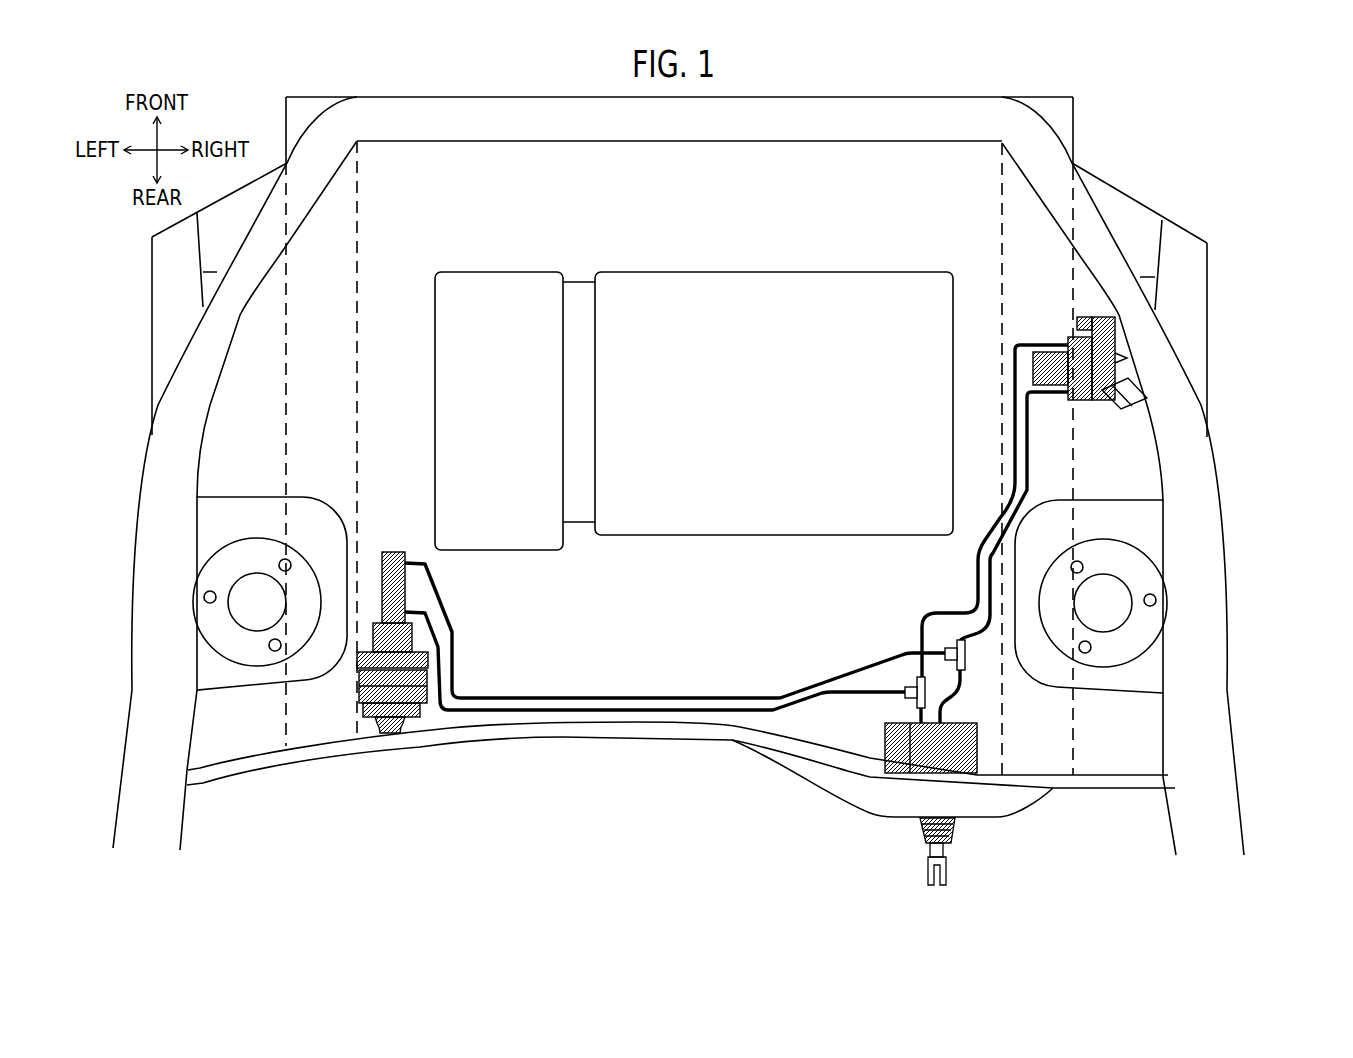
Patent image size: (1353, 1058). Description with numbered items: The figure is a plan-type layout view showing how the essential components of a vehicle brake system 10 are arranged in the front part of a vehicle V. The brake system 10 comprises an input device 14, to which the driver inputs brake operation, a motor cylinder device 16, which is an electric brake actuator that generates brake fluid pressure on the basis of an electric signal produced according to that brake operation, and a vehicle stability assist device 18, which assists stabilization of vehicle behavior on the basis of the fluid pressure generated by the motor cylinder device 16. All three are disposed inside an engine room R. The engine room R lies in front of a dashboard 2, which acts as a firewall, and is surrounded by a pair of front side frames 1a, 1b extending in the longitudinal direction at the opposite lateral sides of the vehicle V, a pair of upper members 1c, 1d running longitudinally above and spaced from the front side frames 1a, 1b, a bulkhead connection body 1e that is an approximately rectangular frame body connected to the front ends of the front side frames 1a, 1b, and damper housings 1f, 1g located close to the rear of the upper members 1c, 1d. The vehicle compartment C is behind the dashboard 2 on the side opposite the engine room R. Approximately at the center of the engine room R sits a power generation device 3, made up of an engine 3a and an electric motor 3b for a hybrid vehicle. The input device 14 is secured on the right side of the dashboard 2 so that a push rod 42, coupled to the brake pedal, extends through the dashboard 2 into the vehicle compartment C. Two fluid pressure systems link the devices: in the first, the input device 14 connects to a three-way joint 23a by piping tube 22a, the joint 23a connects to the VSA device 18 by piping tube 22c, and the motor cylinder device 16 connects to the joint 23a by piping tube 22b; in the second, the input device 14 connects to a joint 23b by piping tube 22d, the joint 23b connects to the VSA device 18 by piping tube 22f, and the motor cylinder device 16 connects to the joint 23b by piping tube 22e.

The vehicle V is at (1135, 113).
The vehicle brake system 10 is at (824, 511).
The front side frame 1a is at (285, 467).
The front side frame 1b is at (1000, 248).
The upper member 1c is at (143, 740).
The upper member 1d is at (1216, 740).
The bulkhead connection body 1e is at (687, 130).
The damper housing 1f is at (247, 640).
The damper housing 1g is at (1095, 677).
The dashboard 2 is at (681, 776).
The power generation device 3 is at (657, 237).
The engine 3a is at (662, 282).
The electric motor 3b is at (525, 282).
The engine room R is at (654, 596).
The vehicle compartment C is at (763, 859).
The input device 14 is at (1009, 793).
The motor cylinder device 16 is at (436, 709).
The vehicle stability assist device 18 is at (1096, 401).
The piping tube 22a is at (918, 717).
The piping tube 22b is at (440, 667).
The piping tube 22c is at (977, 573).
The piping tube 22d is at (942, 715).
The piping tube 22e is at (452, 622).
The piping tube 22f is at (990, 593).
The joint 23a is at (908, 682).
The joint 23b is at (946, 644).
The push rod 42 is at (928, 843).